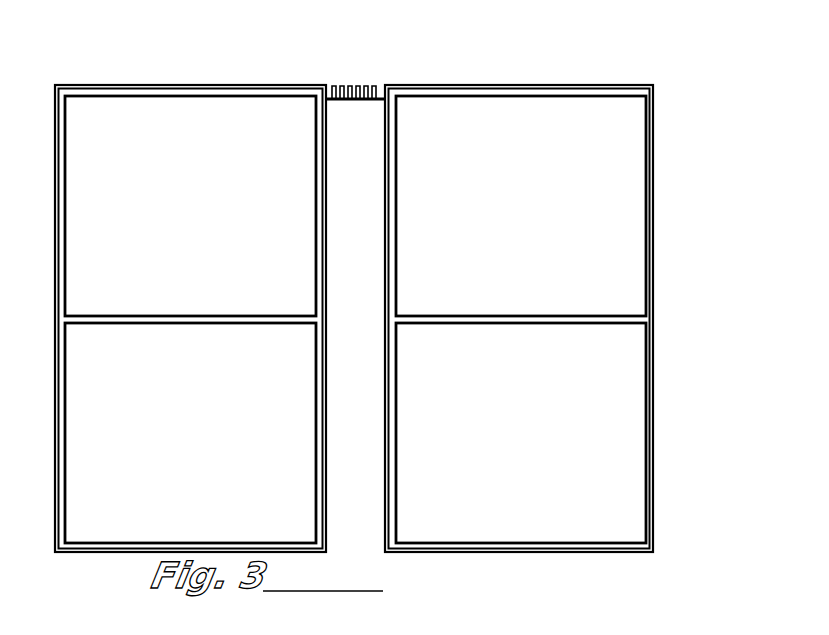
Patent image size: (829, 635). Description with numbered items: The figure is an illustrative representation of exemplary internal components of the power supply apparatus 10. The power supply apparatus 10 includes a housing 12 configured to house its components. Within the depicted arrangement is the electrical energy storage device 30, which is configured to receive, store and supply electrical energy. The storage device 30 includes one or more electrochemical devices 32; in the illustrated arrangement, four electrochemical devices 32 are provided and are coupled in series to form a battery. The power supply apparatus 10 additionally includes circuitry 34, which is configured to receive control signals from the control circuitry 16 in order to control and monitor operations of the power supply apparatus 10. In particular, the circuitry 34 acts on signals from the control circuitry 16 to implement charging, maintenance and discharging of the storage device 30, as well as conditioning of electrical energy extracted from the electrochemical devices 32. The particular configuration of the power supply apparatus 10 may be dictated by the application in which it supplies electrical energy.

The power supply apparatus 10 is at (391, 298).
The housing 12 is at (655, 233).
The control circuitry 16 is at (372, 56).
The electrical energy storage device 30 is at (379, 334).
The electrochemical device 32 is at (205, 223).
The circuitry 34 is at (358, 70).